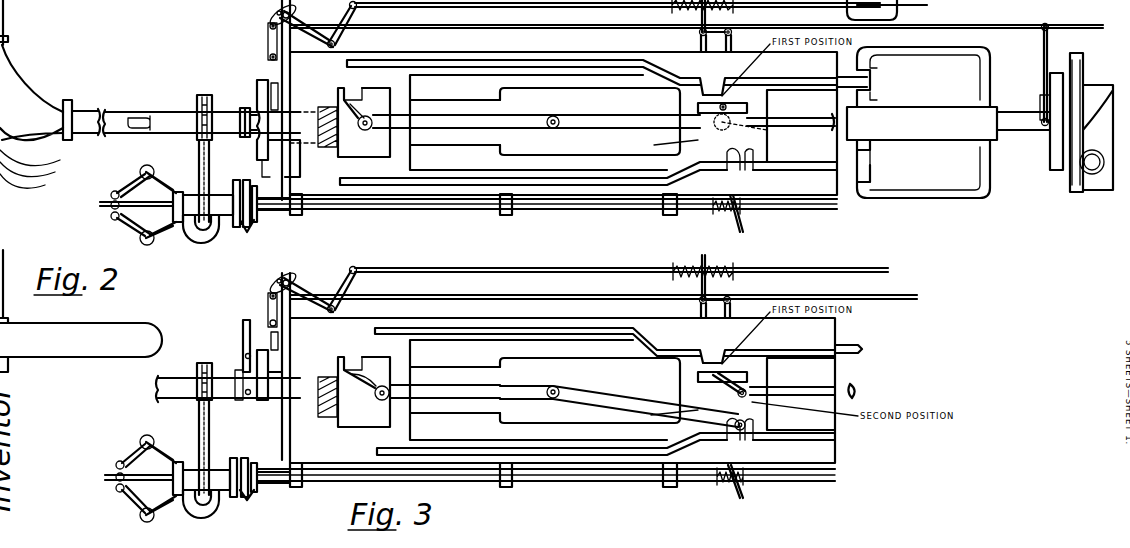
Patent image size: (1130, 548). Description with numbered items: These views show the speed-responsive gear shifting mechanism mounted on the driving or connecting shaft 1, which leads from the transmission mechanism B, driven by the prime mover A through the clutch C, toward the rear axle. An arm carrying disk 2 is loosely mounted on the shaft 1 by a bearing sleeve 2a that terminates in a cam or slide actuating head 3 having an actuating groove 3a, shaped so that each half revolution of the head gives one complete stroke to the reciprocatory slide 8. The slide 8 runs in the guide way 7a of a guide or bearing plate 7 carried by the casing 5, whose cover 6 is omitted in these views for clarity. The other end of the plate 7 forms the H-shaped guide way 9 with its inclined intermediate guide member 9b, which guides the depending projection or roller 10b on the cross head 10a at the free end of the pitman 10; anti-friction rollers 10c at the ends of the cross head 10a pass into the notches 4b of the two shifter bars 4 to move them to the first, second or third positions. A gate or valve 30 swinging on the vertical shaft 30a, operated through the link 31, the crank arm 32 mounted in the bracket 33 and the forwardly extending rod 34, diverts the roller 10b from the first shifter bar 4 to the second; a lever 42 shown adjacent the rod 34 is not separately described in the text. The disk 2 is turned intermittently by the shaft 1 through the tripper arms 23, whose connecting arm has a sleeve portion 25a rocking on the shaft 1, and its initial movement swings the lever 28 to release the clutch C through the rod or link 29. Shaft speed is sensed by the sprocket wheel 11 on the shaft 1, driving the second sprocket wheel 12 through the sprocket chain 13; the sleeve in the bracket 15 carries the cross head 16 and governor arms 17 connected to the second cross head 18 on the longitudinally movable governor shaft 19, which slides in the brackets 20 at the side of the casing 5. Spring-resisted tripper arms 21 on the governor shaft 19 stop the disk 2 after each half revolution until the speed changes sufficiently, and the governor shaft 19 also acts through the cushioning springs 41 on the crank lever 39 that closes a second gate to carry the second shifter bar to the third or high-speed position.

In FIG. 2, the driving or connecting shaft 1 is at (156, 112).
In FIG. 3, the driving or connecting shaft 1 is at (162, 382).
In FIG. 2, the arm carrying disk 2 is at (255, 86).
In FIG. 3, the arm carrying disk 2 is at (270, 376).
In FIG. 2, the bearing sleeve 2a is at (322, 150).
In FIG. 3, the bearing sleeve 2a is at (320, 414).
In FIG. 2, the cam or slide actuating head 3 is at (336, 96).
In FIG. 3, the cam or slide actuating head 3 is at (345, 357).
In FIG. 2, the cam or actuating groove 3a is at (358, 102).
In FIG. 3, the cam or actuating groove 3a is at (368, 366).
In FIG. 2, the shifter bar 4 is at (472, 60).
In FIG. 3, the shifter bar 4 is at (432, 328).
In FIG. 2, the notch or recess 4b is at (745, 172).
In FIG. 3, the notch or recess 4b is at (700, 372).
In FIG. 2, the casing 5 is at (628, 50).
In FIG. 3, the casing 5 is at (826, 460).
In FIG. 2, the cover 6 is at (357, 230).
In FIG. 2, the guide or bearing plate 7 is at (550, 92).
In FIG. 3, the guide or bearing plate 7 is at (530, 362).
In FIG. 3, the guide way 7a is at (420, 380).
In FIG. 2, the reciprocatory slide 8 is at (436, 122).
In FIG. 3, the reciprocatory slide 8 is at (445, 392).
In FIG. 2, the shaft section 9 is at (110, 240).
In FIG. 3, the shaft section 9 is at (778, 394).
In FIG. 2, the inclined intermediate guide member 9b is at (769, 143).
In FIG. 3, the inclined intermediate guide member 9b is at (756, 384).
In FIG. 2, the pitman 10 is at (586, 118).
In FIG. 3, the pitman 10 is at (586, 390).
In FIG. 2, the cross head 10a is at (718, 118).
In FIG. 3, the cross head 10a is at (748, 418).
In FIG. 2, the depending projection or roller 10b is at (769, 100).
In FIG. 3, the anti-friction roller 10c is at (744, 430).
In FIG. 2, the sprocket wheel 11 is at (199, 104).
In FIG. 3, the sprocket wheel 11 is at (201, 362).
In FIG. 2, the second sprocket wheel 12 is at (210, 198).
In FIG. 3, the second sprocket wheel 12 is at (210, 472).
In FIG. 2, the sprocket chain 13 is at (197, 152).
In FIG. 3, the sprocket chain 13 is at (210, 432).
In FIG. 2, the bracket 15 is at (206, 236).
In FIG. 3, the bracket 15 is at (208, 505).
In FIG. 2, the cross head 16 is at (162, 190).
In FIG. 3, the cross head 16 is at (164, 462).
In FIG. 2, the governor arm 17 is at (166, 234).
In FIG. 3, the governor arm 17 is at (140, 444).
In FIG. 2, the second cross head 18 is at (112, 213).
In FIG. 2, the governor shaft 19 is at (472, 210).
In FIG. 3, the governor shaft 19 is at (604, 481).
In FIG. 2, the bracket 20 is at (296, 212).
In FIG. 3, the bracket 20 is at (296, 486).
In FIG. 2, the spring resisted tripper arm 21 is at (261, 212).
In FIG. 3, the spring resisted tripper arm 21 is at (250, 500).
In FIG. 3, the tripper arm 23 is at (243, 330).
In FIG. 3, the sleeve portion 25a is at (240, 386).
In FIG. 2, the lever 28 is at (266, 38).
In FIG. 3, the lever 28 is at (266, 302).
In FIG. 2, the rod or link 29 is at (458, 26).
In FIG. 3, the rod or link 29 is at (492, 297).
In FIG. 3, the gate or valve 30 is at (736, 382).
In FIG. 2, the vertically extending shaft 30a is at (740, 102).
In FIG. 3, the vertically extending shaft 30a is at (700, 392).
In FIG. 2, the link 31 is at (732, 43).
In FIG. 3, the link 31 is at (731, 309).
In FIG. 2, the crank arm 32 is at (702, 14).
In FIG. 3, the crank arm 32 is at (700, 285).
In FIG. 2, the bracket 33 is at (699, 43).
In FIG. 3, the bracket 33 is at (699, 309).
In FIG. 2, the rod 34 is at (438, 255).
In FIG. 3, the rod 34 is at (412, 270).
In FIG. 2, the crank lever 39 is at (745, 226).
In FIG. 3, the crank lever 39 is at (745, 494).
In FIG. 2, the cushioning spring 41 is at (724, 214).
In FIG. 3, the cushioning spring 41 is at (726, 486).
In FIG. 2, the bell crank lever 42 is at (338, 20).
In FIG. 3, the bell crank lever 42 is at (340, 286).
In FIG. 2, the prime mover A is at (1104, 175).
In FIG. 2, the transmission mechanism B is at (917, 136).
In FIG. 2, the clutch C is at (1040, 130).